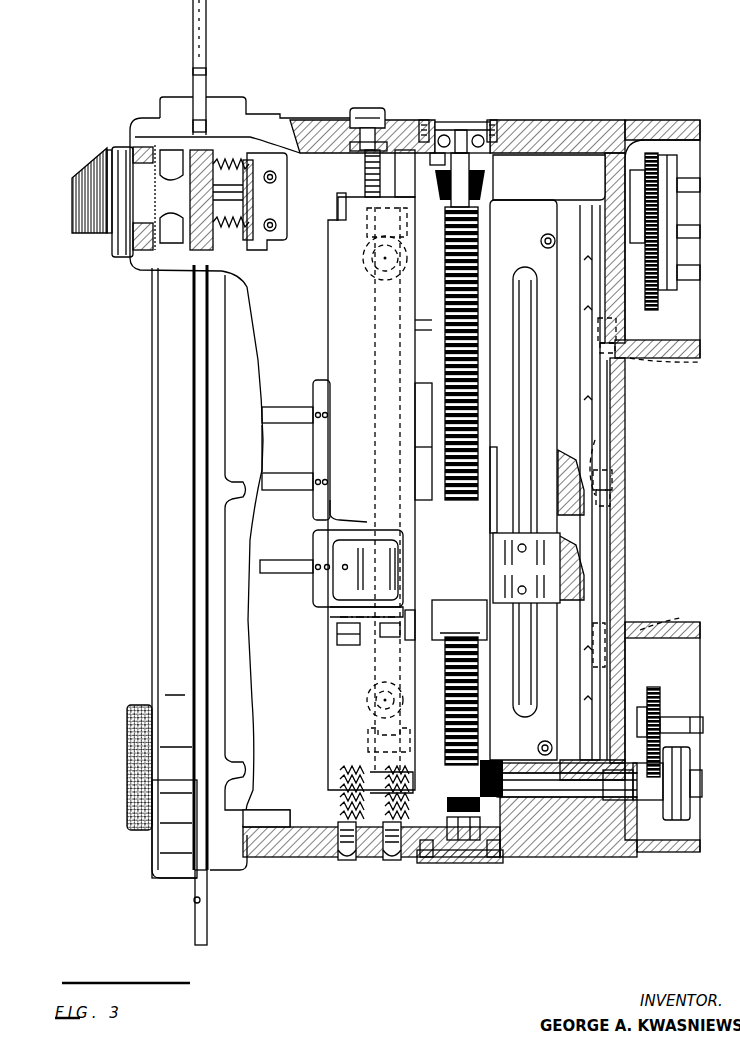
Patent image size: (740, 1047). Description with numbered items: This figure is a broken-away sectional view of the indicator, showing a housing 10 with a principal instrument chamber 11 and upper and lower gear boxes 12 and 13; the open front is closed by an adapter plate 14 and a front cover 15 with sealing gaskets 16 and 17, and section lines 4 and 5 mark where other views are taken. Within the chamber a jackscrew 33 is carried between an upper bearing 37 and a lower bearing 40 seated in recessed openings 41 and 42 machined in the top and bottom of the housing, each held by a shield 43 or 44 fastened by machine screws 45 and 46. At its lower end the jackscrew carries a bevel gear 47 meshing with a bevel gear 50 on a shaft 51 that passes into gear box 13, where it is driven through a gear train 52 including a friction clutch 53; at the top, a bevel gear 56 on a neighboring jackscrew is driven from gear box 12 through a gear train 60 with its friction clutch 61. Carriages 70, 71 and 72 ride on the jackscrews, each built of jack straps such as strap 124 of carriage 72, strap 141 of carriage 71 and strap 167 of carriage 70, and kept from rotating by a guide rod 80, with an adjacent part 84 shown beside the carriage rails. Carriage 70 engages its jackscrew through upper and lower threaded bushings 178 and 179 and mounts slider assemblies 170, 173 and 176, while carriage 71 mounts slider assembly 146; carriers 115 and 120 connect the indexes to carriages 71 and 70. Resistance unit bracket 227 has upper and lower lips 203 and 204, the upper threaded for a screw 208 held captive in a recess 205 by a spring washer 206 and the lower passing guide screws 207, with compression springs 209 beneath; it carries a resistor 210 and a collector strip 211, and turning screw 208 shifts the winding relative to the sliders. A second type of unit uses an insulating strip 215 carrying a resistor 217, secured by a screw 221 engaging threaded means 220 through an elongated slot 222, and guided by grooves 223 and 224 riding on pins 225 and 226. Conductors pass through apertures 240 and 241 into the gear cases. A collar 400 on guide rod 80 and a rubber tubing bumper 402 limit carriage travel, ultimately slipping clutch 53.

The section line 4- 4 is at (175, 365).
The section line 5- 5 is at (300, 165).
The housing 10 is at (545, 125).
The principal instrument chamber 11 is at (575, 162).
The upper gear box 12 is at (700, 135).
The lower gear box 13 is at (664, 830).
The adapter plate 14 is at (208, 922).
The front cover 15 is at (167, 880).
The sealing gasket 16 is at (208, 120).
The sealing gasket 17 is at (194, 100).
The jackscrew 33 is at (445, 238).
The bearing 37 is at (468, 138).
The bearing 40 is at (468, 842).
The recessed opening 41 is at (438, 158).
The recessed opening 42 is at (447, 820).
The shield 43 is at (455, 122).
The shield 44 is at (460, 864).
The machine screw 45 is at (424, 120).
The machine screw 46 is at (427, 858).
The bevel gear 47 is at (487, 815).
The bevel gear 50 is at (528, 838).
The shaft 51 is at (576, 800).
The gear train 52 is at (672, 700).
The friction clutch 53 is at (680, 825).
The bevel gear 56 is at (450, 178).
The gear train 60 is at (651, 150).
The friction clutch 61 is at (668, 155).
The carriage 70 is at (310, 588).
The carriage 71 is at (305, 503).
The carriage 72 is at (310, 378).
The guide rod 80 is at (402, 180).
The rail 84 is at (294, 425).
The carrier 115 is at (295, 490).
The carrier 120 is at (290, 573).
The jack strap 124 is at (418, 393).
The jack strap 141 is at (410, 478).
The slider assembly 146 is at (575, 435).
The jack strap 167 is at (412, 625).
The slider assembly 170 is at (575, 528).
The slider assembly 173 is at (505, 528).
The slider assembly 176 is at (343, 606).
The threaded bushing 178 is at (505, 530).
The threaded bushing 179 is at (440, 636).
The upper mounting lip 203 is at (337, 196).
The lower mounting lip 204 is at (340, 778).
The recess 205 is at (378, 101).
The spring washer 206 is at (355, 150).
The guide screw 207 is at (350, 860).
The screw 208 is at (365, 175).
The compression spring 209 is at (345, 805).
The resistor 210 is at (345, 634).
The collector strip 211 is at (385, 637).
The strip 215 is at (600, 568).
The resistor 217 is at (590, 598).
The internally threaded means 220 is at (600, 462).
The screw 221 is at (610, 478).
The elongated slot 222 is at (608, 500).
The upper longitudinal groove 223 is at (612, 345).
The lower longitudinal groove 224 is at (607, 590).
The pin 225 is at (616, 325).
The pin 226 is at (605, 650).
The bracket 227 is at (330, 688).
The aperture 240 is at (695, 362).
The aperture 241 is at (672, 620).
The collar 400 is at (367, 745).
The rubber tubing 402 is at (365, 715).